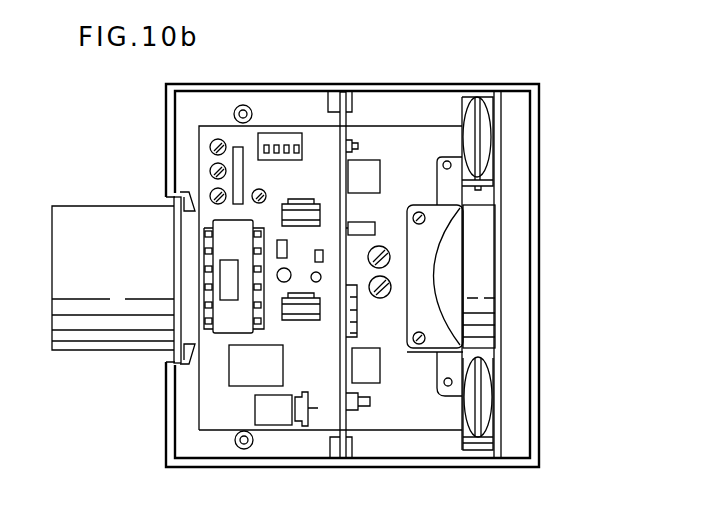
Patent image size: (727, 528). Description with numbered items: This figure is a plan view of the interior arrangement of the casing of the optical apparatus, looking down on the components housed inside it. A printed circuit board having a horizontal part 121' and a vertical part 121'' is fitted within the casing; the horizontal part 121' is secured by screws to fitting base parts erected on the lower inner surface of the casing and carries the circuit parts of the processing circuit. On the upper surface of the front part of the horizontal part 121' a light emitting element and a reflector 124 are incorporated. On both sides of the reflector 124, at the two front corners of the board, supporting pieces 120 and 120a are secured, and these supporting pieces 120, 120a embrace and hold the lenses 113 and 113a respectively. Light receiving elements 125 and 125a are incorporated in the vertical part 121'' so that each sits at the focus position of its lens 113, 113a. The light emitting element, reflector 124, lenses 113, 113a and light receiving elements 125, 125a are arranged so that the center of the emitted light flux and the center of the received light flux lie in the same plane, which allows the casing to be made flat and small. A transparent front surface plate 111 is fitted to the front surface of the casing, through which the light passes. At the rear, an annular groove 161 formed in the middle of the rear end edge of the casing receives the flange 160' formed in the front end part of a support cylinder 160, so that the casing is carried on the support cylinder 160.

The transparent front surface plate 111 is at (533, 250).
The lens 113 is at (487, 407).
The lens 113a is at (487, 140).
The supporting piece 120 is at (468, 452).
The supporting piece 120a is at (465, 95).
The horizontal part of printed circuit board 121' is at (398, 253).
The vertical part of printed circuit board 121'' is at (374, 240).
The reflector 124 is at (455, 300).
The light receiving element 125 is at (345, 402).
The light receiving element 125a is at (332, 142).
The support cylinder 160 is at (113, 297).
The flange 160' is at (134, 256).
The annular groove 161 is at (180, 195).